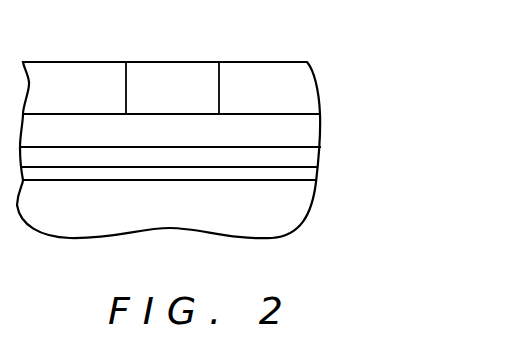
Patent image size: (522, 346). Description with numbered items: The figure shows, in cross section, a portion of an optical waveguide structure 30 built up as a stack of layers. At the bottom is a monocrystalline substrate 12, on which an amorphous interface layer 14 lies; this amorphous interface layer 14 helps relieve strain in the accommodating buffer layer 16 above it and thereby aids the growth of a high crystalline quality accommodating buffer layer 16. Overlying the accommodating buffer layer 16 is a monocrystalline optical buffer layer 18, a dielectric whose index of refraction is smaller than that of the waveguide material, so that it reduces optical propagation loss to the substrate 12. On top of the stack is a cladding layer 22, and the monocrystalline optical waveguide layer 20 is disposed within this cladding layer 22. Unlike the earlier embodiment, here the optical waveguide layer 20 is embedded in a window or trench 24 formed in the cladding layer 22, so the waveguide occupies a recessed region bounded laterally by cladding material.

The monocrystalline substrate 12 is at (292, 222).
The amorphous interface layer 14 is at (308, 172).
The accommodating buffer layer 16 is at (305, 160).
The monocrystalline optical buffer layer 18 is at (302, 135).
The monocrystalline optical waveguide layer 20 is at (149, 70).
The cladding layer 22 is at (311, 94).
The window or trench 24 is at (220, 80).
The optical waveguide structure 30 is at (297, 52).